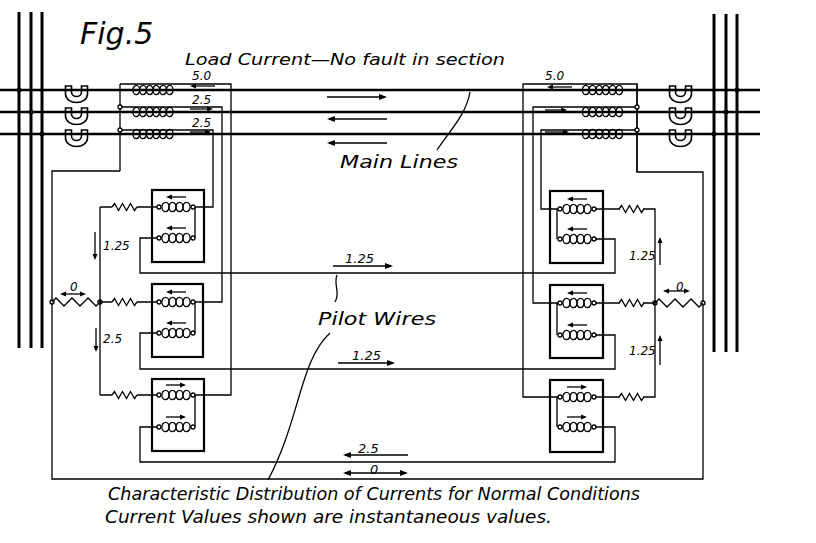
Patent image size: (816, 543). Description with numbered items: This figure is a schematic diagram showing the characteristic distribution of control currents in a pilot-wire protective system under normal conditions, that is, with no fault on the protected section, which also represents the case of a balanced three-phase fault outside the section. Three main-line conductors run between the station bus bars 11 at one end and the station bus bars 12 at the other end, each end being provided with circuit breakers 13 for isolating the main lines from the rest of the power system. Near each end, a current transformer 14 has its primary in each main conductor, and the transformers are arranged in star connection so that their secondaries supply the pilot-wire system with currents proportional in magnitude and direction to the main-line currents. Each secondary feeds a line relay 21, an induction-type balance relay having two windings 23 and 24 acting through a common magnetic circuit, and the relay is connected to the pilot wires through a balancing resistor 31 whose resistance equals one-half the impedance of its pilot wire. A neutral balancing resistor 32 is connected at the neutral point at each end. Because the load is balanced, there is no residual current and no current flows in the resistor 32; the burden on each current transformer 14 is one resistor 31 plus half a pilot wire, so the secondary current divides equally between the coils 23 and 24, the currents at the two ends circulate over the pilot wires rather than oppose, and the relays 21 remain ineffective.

The station bus bars 11 is at (66, 43).
The station bus bars 12 is at (762, 77).
The circuit breaker 13 is at (71, 87).
The current transformer 14 is at (144, 87).
The line relay 21 is at (201, 180).
The relay winding 23 is at (196, 238).
The relay winding 24 is at (197, 207).
The balancing resistor 31 is at (116, 203).
The neutral balancing resistor 32 is at (78, 304).